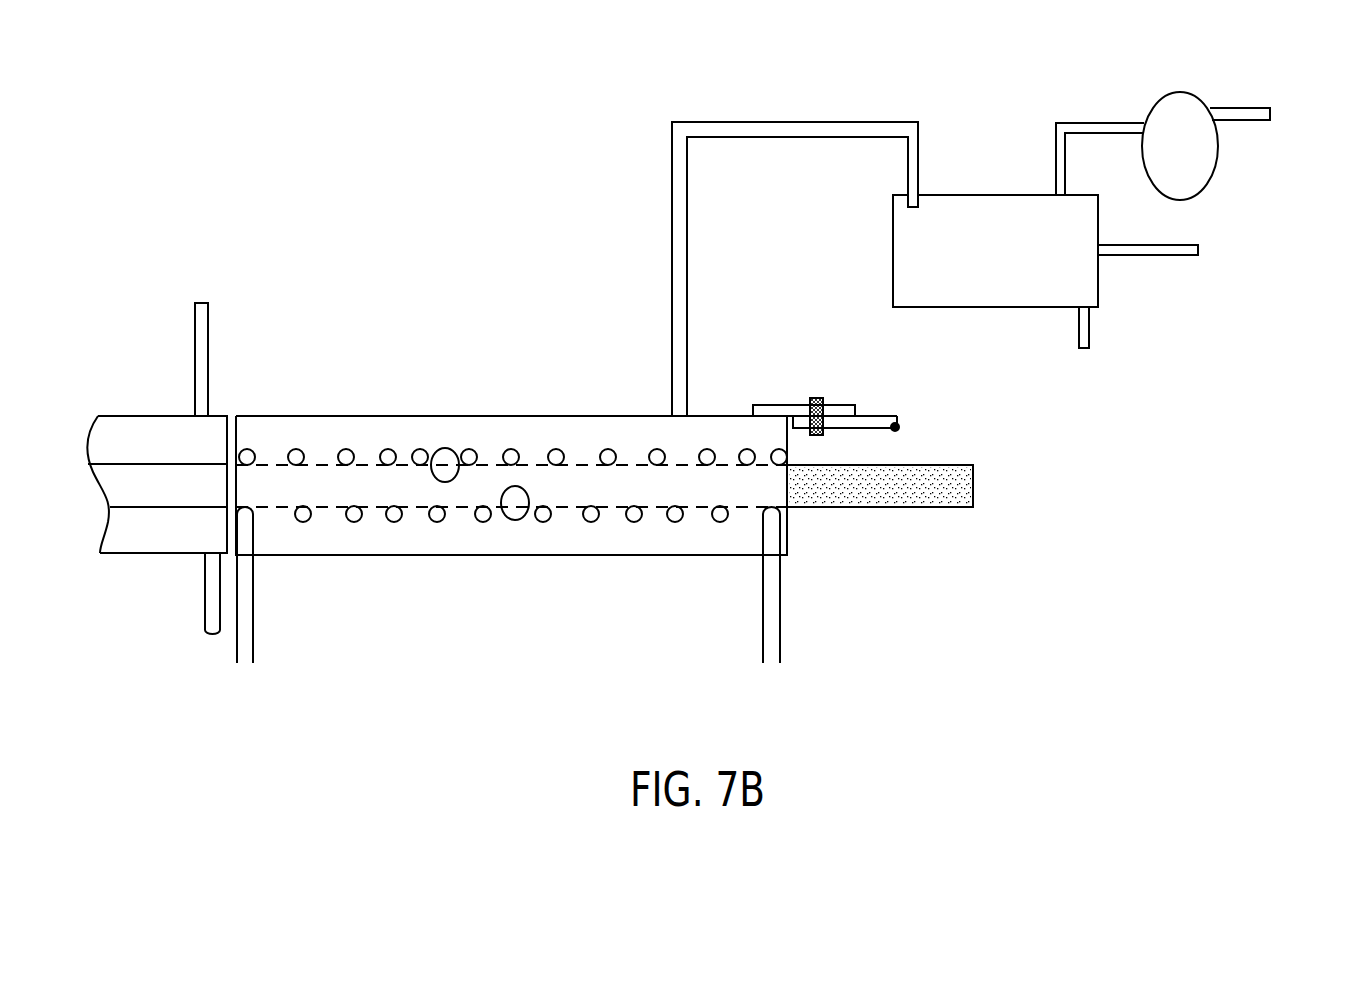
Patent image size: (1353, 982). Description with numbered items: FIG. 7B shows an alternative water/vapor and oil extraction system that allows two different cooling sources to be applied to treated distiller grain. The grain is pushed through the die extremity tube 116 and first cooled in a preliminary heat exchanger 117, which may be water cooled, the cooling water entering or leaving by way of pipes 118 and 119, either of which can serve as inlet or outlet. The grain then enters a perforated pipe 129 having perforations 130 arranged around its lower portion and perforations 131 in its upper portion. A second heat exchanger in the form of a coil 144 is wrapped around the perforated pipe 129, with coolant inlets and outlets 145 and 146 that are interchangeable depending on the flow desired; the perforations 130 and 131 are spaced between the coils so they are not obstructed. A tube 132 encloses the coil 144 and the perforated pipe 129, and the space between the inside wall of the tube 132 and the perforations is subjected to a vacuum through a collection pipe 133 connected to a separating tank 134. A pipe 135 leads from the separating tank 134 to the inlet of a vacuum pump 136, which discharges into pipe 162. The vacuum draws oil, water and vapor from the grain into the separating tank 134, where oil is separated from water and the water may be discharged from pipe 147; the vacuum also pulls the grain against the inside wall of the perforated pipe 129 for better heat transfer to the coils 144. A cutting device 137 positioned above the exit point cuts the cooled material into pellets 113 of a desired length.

The pellets 113 is at (887, 508).
The die extremity tube 116 is at (152, 508).
The heat exchanger assembly 117 is at (157, 415).
The pipe 118 is at (205, 302).
The pipe 119 is at (212, 636).
The perforated pipe 129 is at (632, 457).
The perforations 130 is at (516, 521).
The perforations 131 is at (450, 449).
The tube 132 is at (318, 415).
The collection pipe 133 is at (670, 240).
The separating tank 134 is at (905, 262).
The pipe 135 is at (1056, 145).
The vacuum pump 136 is at (1212, 168).
The cutting device 137 is at (948, 452).
The heat exchanger coil 144 is at (394, 523).
The coolant inlet/outlet 145 is at (241, 661).
The coolant inlet/outlet 146 is at (770, 663).
The pipe 147 is at (1140, 257).
The pipe 162 is at (1248, 121).